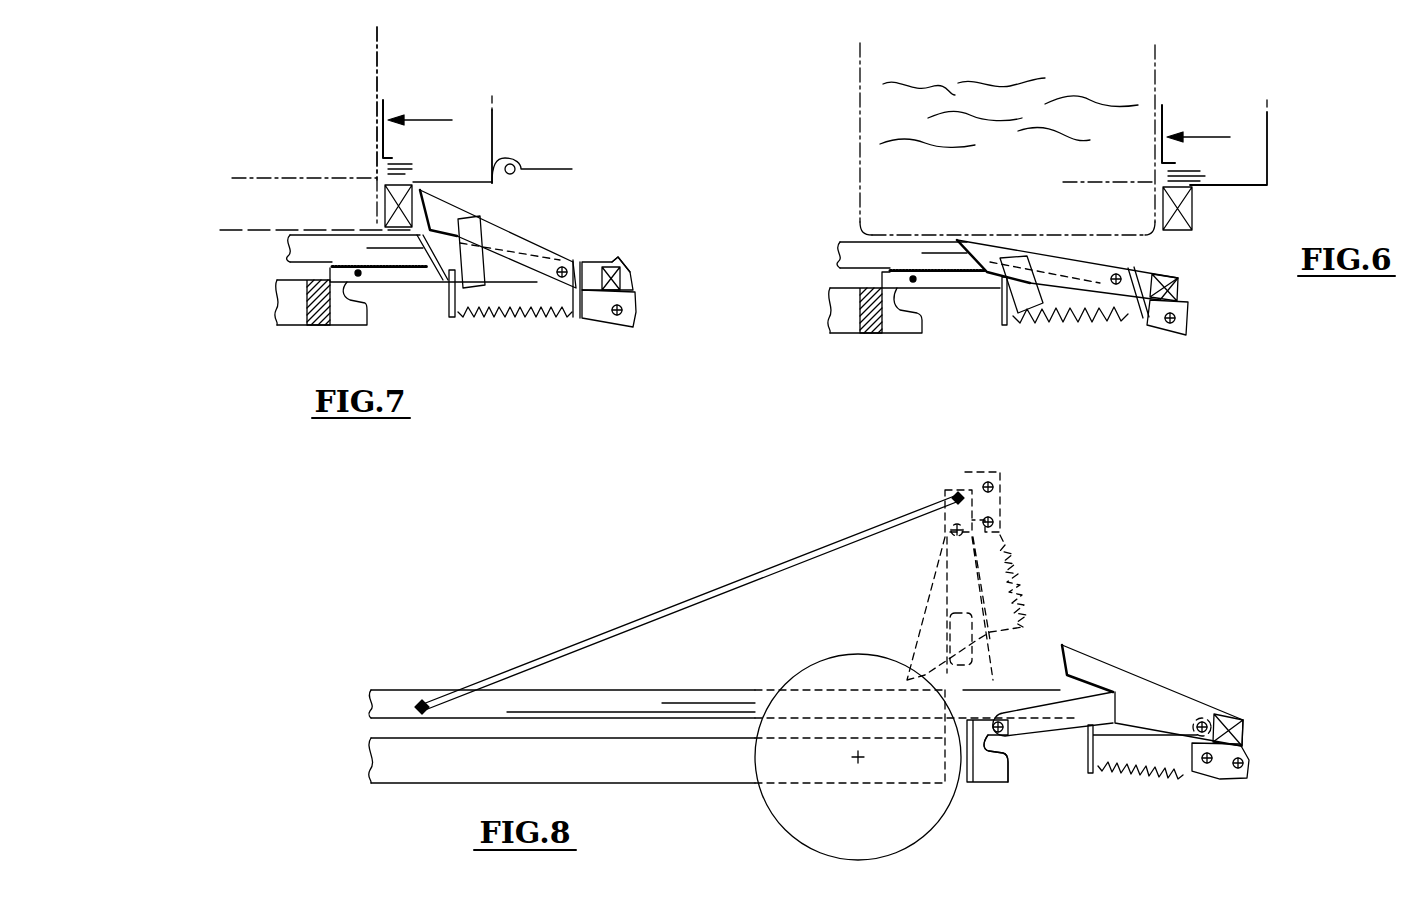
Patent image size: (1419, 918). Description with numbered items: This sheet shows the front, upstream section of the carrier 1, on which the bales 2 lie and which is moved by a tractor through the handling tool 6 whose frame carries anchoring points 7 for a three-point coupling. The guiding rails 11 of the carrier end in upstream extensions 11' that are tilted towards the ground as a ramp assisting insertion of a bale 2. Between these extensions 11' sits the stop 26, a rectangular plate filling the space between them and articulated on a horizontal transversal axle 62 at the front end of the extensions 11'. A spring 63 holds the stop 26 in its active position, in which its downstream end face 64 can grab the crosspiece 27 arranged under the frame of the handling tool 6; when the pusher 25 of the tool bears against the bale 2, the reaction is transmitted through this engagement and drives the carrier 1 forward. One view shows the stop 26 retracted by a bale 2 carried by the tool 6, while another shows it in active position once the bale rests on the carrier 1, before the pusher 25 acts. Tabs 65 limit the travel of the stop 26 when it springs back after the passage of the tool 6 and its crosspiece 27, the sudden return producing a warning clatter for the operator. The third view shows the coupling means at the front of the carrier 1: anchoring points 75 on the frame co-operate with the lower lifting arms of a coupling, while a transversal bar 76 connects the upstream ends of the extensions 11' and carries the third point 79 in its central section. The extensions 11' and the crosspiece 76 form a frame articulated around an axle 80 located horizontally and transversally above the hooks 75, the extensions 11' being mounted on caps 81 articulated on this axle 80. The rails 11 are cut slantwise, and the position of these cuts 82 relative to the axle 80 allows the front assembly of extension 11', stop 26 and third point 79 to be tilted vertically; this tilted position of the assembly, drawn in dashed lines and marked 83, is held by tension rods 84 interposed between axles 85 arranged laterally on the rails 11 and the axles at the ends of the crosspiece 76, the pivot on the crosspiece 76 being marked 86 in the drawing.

In FIG. 7, the carrier 1 is at (295, 328).
In FIG. 6, the carrier 1 is at (845, 335).
In FIG. 8, the carrier 1 is at (388, 762).
In FIG. 7, the bale 2 is at (362, 55).
In FIG. 6, the bale 2 is at (883, 72).
In FIG. 7, the tool 6 is at (501, 104).
In FIG. 6, the anchoring points 7 is at (1298, 182).
In FIG. 7, the rails 11 is at (329, 259).
In FIG. 6, the rails 11 is at (891, 237).
In FIG. 8, the rails 11 is at (702, 681).
In FIG. 7, the extensions 11' is at (644, 263).
In FIG. 8, the extensions 11' is at (1179, 700).
In FIG. 7, the pusher 25 is at (390, 106).
In FIG. 6, the pusher 25 is at (1158, 84).
In FIG. 7, the stop 26 is at (533, 205).
In FIG. 6, the stop 26 is at (1096, 253).
In FIG. 8, the stop 26 is at (1116, 658).
In FIG. 7, the crosspiece 27 is at (378, 196).
In FIG. 7, the horizontal transversal axle 62 is at (566, 258).
In FIG. 6, the horizontal transversal axle 62 is at (1120, 263).
In FIG. 7, the spring 63 is at (458, 318).
In FIG. 6, the spring 63 is at (1100, 325).
In FIG. 7, the downstream end face 64 is at (430, 204).
In FIG. 8, the downstream end face 64 is at (1061, 646).
In FIG. 7, the tabs 65 is at (480, 225).
In FIG. 6, the tabs 65 is at (1045, 308).
In FIG. 8, the anchoring points 75 is at (1008, 784).
In FIG. 7, the transversal bar 76 is at (622, 264).
In FIG. 6, the transversal bar 76 is at (1160, 271).
In FIG. 8, the transversal bar 76 is at (1245, 713).
In FIG. 7, the third point 79 is at (632, 318).
In FIG. 6, the third point 79 is at (1187, 331).
In FIG. 8, the third point 79 is at (1000, 499).
In FIG. 7, the axle 80 is at (358, 274).
In FIG. 6, the axle 80 is at (915, 282).
In FIG. 8, the axle 80 is at (1010, 736).
In FIG. 8, the caps 81 is at (1050, 689).
In FIG. 8, the cuts 82 is at (1053, 688).
In FIG. 8, the carriage 83 is at (952, 474).
In FIG. 8, the tension rods 84 is at (769, 571).
In FIG. 8, the axles 85 is at (422, 699).
In FIG. 8, the pin 86 is at (1249, 729).